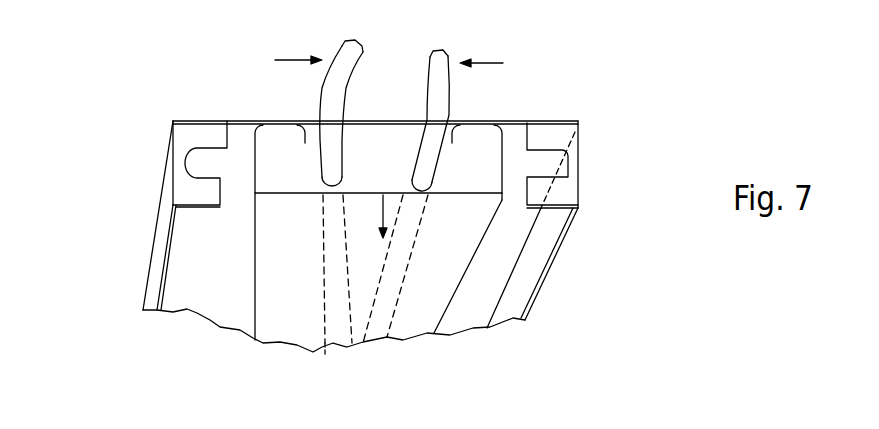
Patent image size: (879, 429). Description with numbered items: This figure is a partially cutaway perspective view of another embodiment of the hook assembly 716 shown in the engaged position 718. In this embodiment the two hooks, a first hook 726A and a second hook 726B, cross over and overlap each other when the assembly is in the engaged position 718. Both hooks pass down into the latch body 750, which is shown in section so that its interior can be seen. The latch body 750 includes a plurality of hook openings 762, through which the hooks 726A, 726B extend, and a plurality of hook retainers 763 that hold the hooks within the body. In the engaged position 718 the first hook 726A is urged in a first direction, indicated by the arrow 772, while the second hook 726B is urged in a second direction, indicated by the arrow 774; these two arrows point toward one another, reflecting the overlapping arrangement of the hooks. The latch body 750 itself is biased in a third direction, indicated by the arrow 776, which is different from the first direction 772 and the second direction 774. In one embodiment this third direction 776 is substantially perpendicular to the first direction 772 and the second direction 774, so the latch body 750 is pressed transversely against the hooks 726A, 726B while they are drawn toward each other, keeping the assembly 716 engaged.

The hook assembly 716 is at (108, 121).
The engaged position 718 is at (457, 117).
The first hook 726A is at (357, 62).
The second hook 726B is at (430, 86).
The latch body 750 is at (447, 262).
The hook openings 762 is at (322, 180).
The hook retainers 763 is at (323, 188).
The arrow indicating first direction 772 is at (297, 60).
The arrow indicating second direction 774 is at (486, 63).
The arrow indicating third direction 776 is at (328, 362).